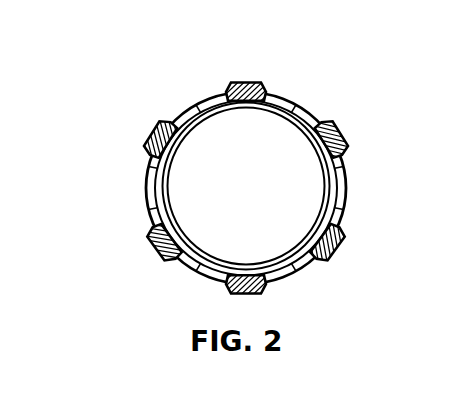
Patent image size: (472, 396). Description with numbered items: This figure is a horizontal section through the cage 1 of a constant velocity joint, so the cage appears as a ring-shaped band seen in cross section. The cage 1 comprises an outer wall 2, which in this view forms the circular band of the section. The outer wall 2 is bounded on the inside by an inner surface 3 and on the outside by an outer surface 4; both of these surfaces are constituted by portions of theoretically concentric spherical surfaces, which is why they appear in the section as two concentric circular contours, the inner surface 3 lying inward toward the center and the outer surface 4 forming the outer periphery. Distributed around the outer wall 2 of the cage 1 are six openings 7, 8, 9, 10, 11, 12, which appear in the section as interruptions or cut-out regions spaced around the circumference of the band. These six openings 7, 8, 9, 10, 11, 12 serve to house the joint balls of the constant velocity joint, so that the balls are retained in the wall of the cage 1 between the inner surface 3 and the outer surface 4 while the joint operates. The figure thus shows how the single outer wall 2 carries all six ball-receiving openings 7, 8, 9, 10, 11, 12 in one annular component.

The cage 1 is at (116, 181).
The outer wall 2 is at (159, 138).
The inner surface 3 is at (166, 244).
The outer surface 4 is at (163, 245).
The opening 7 is at (148, 195).
The opening 8 is at (197, 110).
The opening 9 is at (294, 110).
The opening 10 is at (343, 185).
The opening 11 is at (295, 272).
The opening 12 is at (197, 277).